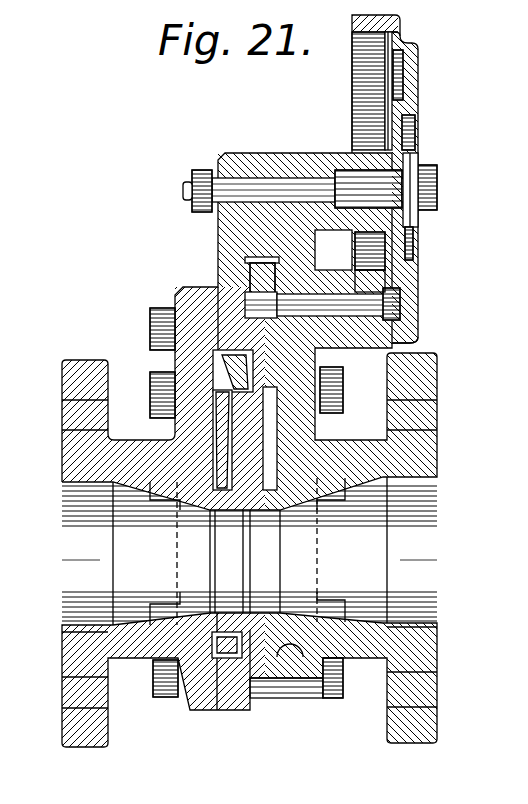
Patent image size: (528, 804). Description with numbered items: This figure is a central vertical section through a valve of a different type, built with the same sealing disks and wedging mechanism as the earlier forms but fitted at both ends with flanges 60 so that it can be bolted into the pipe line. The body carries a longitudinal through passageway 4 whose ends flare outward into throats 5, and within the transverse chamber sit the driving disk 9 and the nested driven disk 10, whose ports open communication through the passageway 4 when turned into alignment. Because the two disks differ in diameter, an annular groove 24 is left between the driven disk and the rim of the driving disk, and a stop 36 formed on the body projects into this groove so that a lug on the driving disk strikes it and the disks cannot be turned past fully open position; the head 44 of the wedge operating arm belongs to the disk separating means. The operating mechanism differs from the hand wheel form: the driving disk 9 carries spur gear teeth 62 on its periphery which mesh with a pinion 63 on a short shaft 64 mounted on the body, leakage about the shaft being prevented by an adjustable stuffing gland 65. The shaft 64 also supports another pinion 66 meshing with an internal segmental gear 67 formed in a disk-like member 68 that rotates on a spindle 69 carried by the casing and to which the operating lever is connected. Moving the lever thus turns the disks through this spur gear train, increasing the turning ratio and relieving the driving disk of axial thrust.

The passageway 4 is at (245, 561).
The throats 5 is at (249, 551).
The driving disk 9 is at (303, 672).
The driven disk 10 is at (212, 380).
The annular groove 24 is at (232, 712).
The stop 36 is at (198, 712).
The head 44 is at (212, 374).
The flanges 60 is at (62, 376).
The spur gear teeth 62 is at (278, 698).
The pinion 63 is at (249, 283).
The short shaft 64 is at (252, 306).
The adjustable stuffing gland 65 is at (418, 282).
The pinion 66 is at (407, 347).
The internal segmental gear 67 is at (352, 107).
The disk-like member 68 is at (418, 85).
The spindle 69 is at (438, 182).